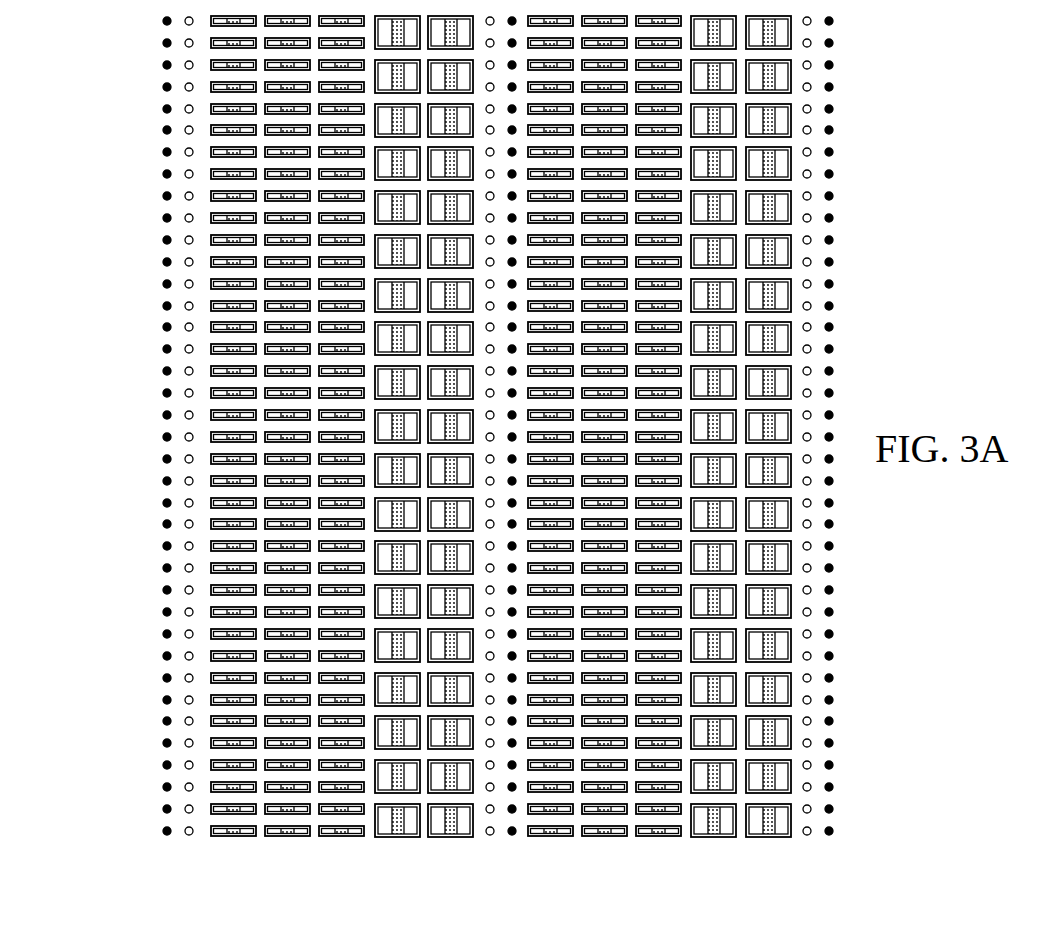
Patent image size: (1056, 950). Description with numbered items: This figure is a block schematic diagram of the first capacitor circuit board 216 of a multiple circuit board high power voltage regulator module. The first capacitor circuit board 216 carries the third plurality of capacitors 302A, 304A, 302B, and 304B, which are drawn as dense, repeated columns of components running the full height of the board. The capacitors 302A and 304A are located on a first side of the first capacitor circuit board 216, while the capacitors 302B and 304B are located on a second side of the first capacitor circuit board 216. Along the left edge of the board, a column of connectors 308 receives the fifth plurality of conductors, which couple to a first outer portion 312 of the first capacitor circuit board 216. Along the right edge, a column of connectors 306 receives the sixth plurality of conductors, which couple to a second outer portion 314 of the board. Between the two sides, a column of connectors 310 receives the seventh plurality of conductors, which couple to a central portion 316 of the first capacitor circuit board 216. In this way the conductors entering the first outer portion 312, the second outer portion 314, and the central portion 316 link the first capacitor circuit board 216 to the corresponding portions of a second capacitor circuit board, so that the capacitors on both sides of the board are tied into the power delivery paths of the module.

The first capacitor circuit board 216 is at (122, 320).
The capacitor 302A is at (343, 837).
The capacitor 304A is at (450, 837).
The capacitor 302B is at (605, 837).
The capacitor 304B is at (770, 837).
The connectors 306 is at (835, 833).
The connectors 308 is at (160, 832).
The connectors 310 is at (515, 837).
The first outer portion 312 is at (172, 858).
The second outer portion 314 is at (828, 858).
The central portion 316 is at (492, 865).